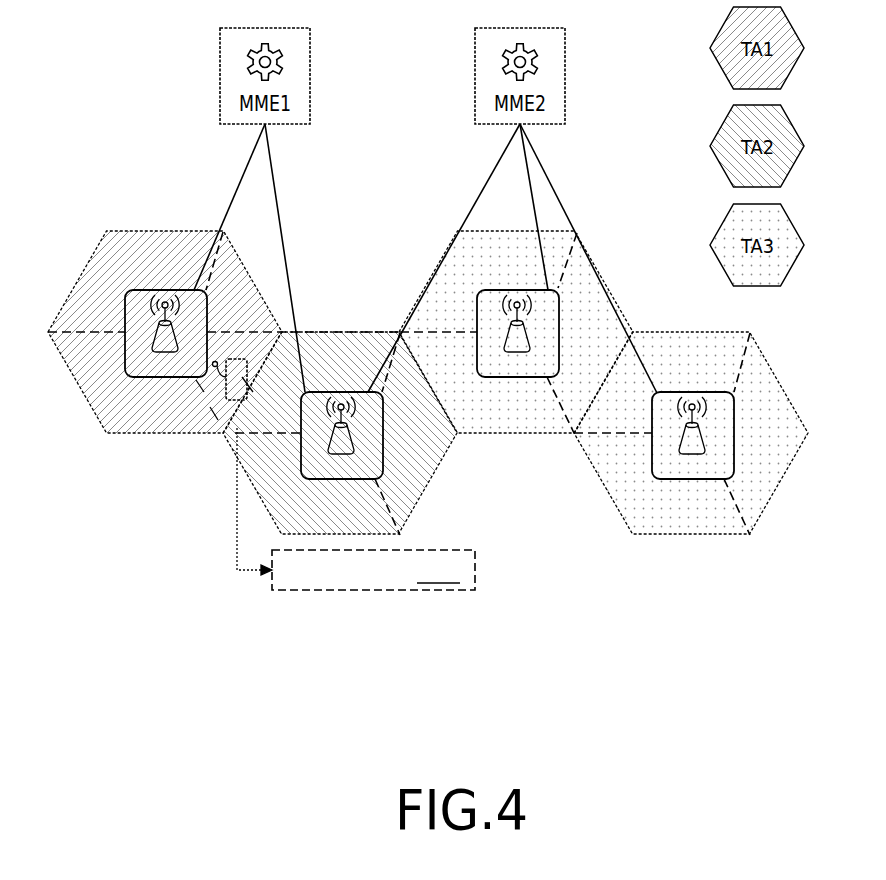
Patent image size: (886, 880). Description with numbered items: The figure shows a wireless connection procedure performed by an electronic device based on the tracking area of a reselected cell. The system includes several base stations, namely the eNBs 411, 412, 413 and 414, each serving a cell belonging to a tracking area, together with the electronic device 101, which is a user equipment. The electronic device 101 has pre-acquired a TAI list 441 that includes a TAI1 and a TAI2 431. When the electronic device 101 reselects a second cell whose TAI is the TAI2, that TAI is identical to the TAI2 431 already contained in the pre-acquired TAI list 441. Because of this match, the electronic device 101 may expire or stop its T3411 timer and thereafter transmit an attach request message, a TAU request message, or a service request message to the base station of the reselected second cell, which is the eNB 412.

The eNB 411 is at (147, 290).
The eNB 412 is at (322, 392).
The eNB 413 is at (497, 290).
The eNB 414 is at (673, 392).
The electronic device 101 is at (226, 393).
The TAI list 441 is at (460, 550).
The TAI2 431 is at (440, 590).